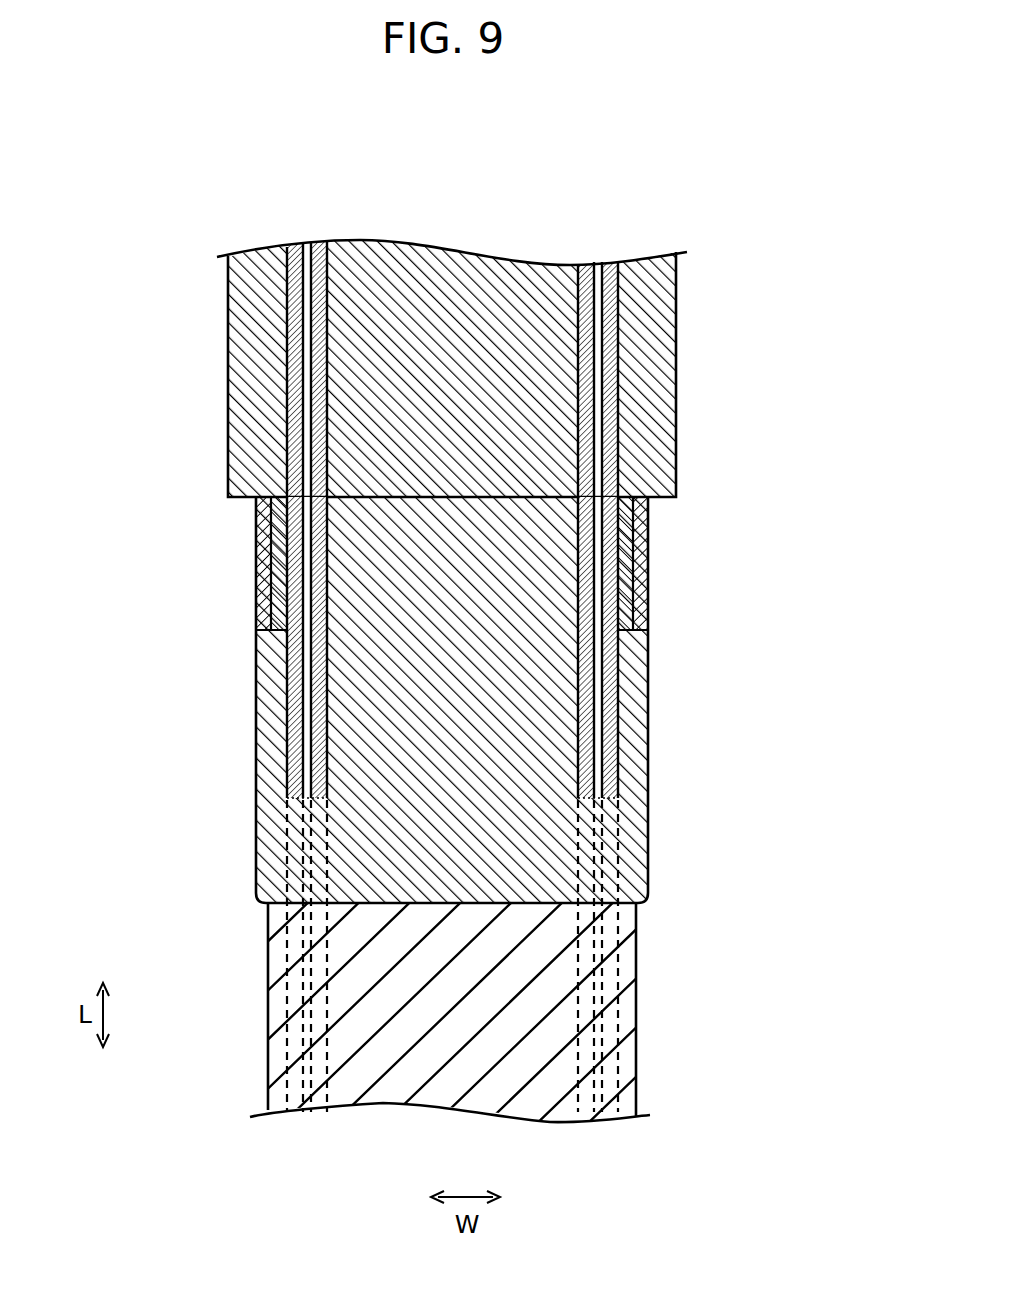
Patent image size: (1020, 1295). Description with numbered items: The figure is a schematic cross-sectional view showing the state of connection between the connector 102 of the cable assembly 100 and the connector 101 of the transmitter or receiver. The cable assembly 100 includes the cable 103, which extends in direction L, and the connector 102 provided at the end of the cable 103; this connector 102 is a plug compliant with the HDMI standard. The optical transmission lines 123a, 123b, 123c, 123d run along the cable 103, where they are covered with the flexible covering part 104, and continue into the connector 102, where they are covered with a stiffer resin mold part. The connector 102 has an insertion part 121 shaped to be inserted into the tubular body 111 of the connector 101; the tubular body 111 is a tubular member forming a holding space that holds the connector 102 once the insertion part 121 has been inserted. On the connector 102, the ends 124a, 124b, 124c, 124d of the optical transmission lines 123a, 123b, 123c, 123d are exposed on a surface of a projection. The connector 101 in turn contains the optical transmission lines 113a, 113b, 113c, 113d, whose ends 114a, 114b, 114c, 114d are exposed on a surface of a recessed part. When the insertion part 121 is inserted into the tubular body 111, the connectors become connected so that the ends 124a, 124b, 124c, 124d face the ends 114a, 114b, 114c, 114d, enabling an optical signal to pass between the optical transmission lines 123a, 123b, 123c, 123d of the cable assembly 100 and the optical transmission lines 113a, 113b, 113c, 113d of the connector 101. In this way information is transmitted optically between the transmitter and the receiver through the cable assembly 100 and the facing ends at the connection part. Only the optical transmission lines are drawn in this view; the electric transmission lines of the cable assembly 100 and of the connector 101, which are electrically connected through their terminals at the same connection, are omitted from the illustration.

The cable assembly 100 is at (443, 725).
The connector 101 is at (442, 326).
The connector 102 is at (454, 804).
The cable 103 is at (410, 936).
The covering part 104 is at (360, 1068).
The tubular body 111 is at (262, 632).
The insertion part 121 is at (258, 596).
The optical transmission line 113a is at (287, 307).
The optical transmission line 113b is at (312, 352).
The optical transmission line 113c is at (597, 313).
The optical transmission line 113d is at (630, 360).
The end 114a is at (291, 508).
The end 114b is at (302, 550).
The end 114c is at (620, 553).
The end 114d is at (624, 526).
The optical transmission line 123a is at (293, 690).
The optical transmission line 123b is at (316, 740).
The optical transmission line 123c is at (592, 660).
The optical transmission line 123d is at (612, 702).
The end 124a is at (300, 497).
The end 124b is at (317, 492).
The end 124c is at (589, 492).
The end 124d is at (605, 497).